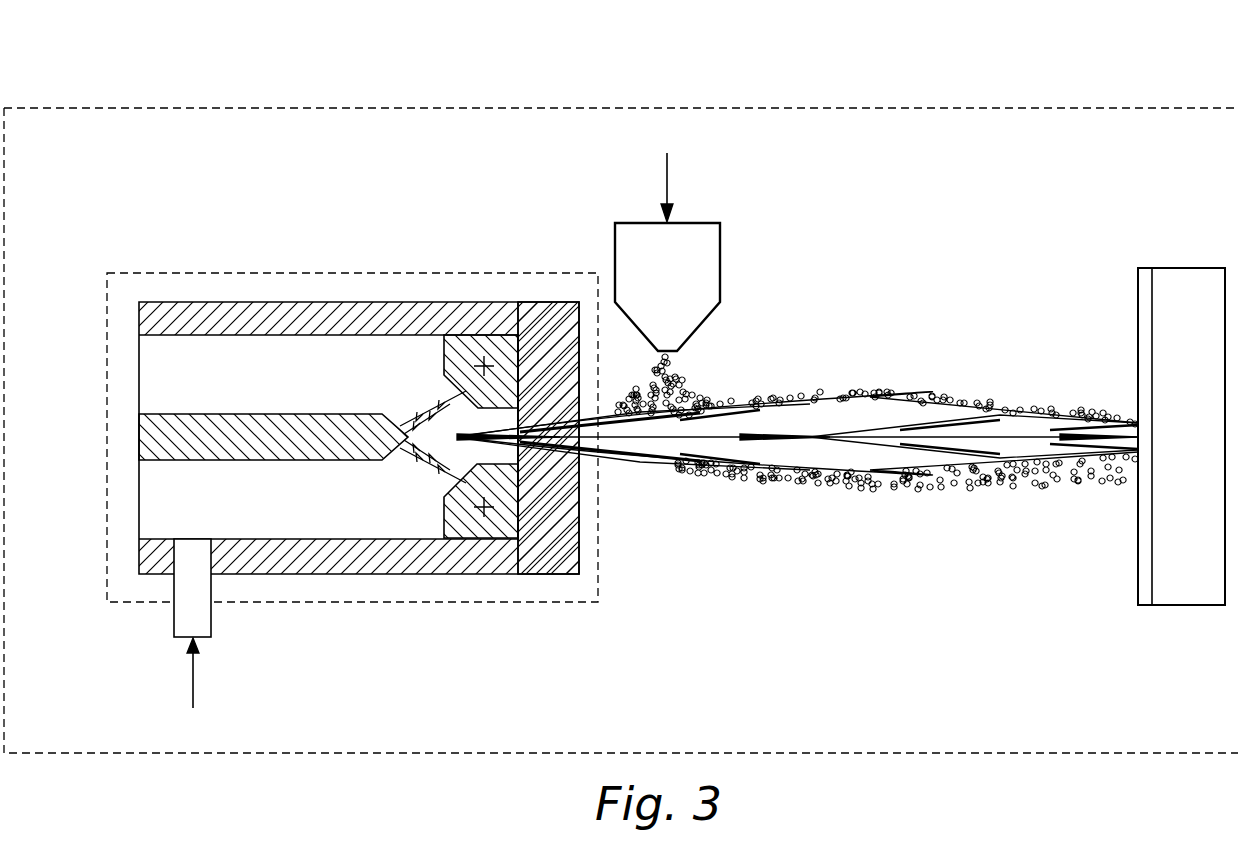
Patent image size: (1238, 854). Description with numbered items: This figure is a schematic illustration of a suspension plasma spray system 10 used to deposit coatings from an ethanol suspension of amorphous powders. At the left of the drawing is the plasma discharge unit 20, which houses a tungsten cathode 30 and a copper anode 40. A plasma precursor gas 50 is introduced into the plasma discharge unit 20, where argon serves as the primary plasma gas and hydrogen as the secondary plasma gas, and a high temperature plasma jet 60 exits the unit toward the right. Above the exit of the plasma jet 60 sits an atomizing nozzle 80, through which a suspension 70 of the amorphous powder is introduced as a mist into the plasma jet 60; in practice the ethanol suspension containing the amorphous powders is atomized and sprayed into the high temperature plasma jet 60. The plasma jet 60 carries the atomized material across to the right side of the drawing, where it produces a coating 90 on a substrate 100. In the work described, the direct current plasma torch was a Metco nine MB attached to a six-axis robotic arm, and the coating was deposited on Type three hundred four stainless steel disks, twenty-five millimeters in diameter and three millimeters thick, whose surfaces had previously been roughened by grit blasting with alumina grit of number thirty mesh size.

The suspension plasma spray system 10 is at (1002, 108).
The plasma discharge unit 20 is at (107, 357).
The tungsten cathode 30 is at (275, 420).
The copper anode 40 is at (470, 522).
The plasma precursor gas 50 is at (192, 683).
The plasma jet 60 is at (897, 397).
The suspension 70 is at (667, 180).
The atomizing nozzle 80 is at (692, 263).
The coating 90 is at (1138, 302).
The substrate 100 is at (1190, 587).